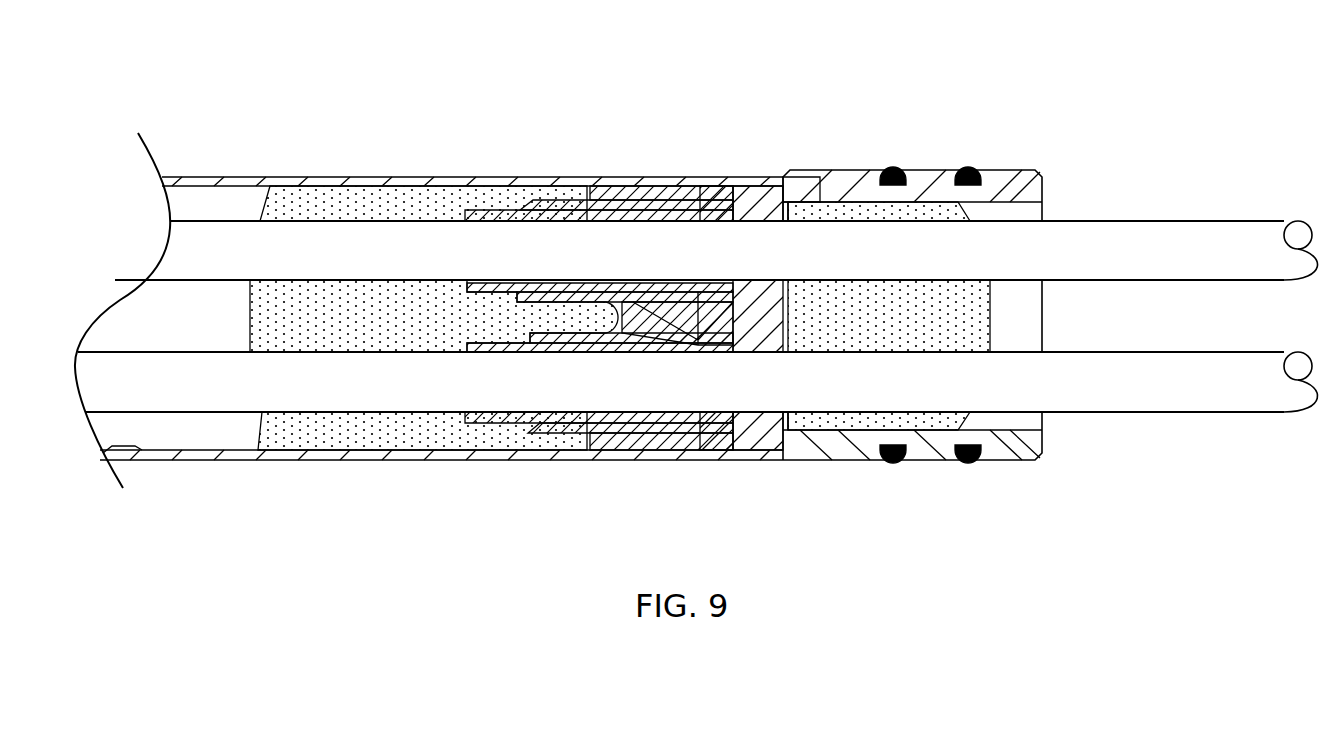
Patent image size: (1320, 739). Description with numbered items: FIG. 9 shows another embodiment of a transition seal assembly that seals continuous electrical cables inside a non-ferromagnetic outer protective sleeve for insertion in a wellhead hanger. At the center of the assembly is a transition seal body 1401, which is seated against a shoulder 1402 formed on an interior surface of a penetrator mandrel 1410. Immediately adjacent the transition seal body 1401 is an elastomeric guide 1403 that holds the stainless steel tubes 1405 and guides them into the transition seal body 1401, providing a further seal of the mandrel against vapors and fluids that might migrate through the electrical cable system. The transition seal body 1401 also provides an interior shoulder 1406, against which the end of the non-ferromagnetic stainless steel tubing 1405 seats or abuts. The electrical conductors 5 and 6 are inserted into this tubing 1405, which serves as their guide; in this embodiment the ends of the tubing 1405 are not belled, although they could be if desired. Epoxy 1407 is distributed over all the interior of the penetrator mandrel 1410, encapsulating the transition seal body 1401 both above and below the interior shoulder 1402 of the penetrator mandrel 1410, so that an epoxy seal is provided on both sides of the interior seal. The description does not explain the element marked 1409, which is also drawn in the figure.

The electrical conductor 5 is at (1128, 268).
The electrical conductor 6 is at (1128, 401).
The transition seal body 1401 is at (765, 447).
The shoulder 1402 is at (808, 183).
The elastomeric guide 1403 is at (628, 432).
The stainless steel tubing 1405 is at (492, 425).
The interior shoulder 1406 is at (733, 200).
The epoxy 1407 is at (375, 198).
The wedge insert 1409 is at (692, 205).
The penetrator mandrel 1410 is at (1042, 172).